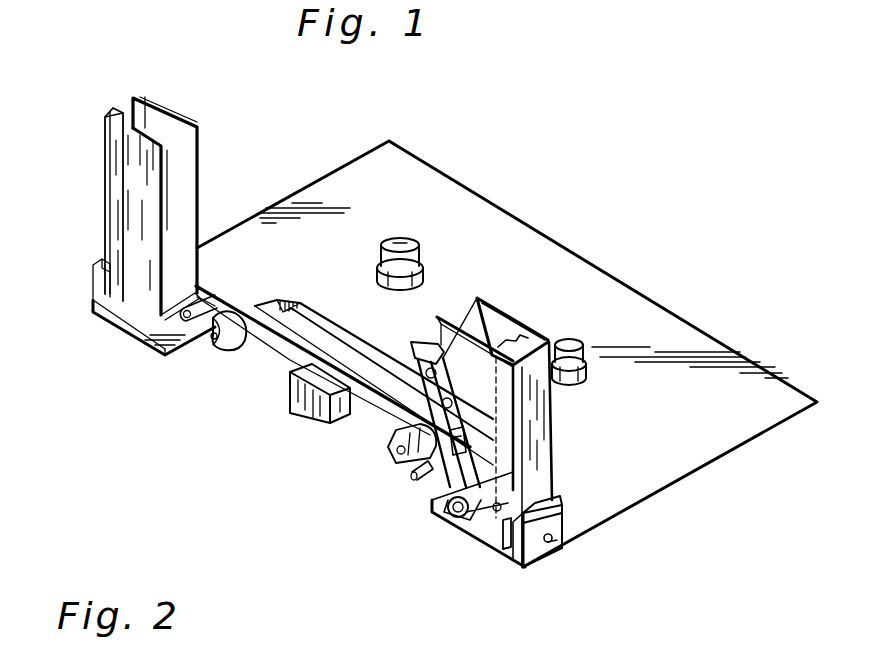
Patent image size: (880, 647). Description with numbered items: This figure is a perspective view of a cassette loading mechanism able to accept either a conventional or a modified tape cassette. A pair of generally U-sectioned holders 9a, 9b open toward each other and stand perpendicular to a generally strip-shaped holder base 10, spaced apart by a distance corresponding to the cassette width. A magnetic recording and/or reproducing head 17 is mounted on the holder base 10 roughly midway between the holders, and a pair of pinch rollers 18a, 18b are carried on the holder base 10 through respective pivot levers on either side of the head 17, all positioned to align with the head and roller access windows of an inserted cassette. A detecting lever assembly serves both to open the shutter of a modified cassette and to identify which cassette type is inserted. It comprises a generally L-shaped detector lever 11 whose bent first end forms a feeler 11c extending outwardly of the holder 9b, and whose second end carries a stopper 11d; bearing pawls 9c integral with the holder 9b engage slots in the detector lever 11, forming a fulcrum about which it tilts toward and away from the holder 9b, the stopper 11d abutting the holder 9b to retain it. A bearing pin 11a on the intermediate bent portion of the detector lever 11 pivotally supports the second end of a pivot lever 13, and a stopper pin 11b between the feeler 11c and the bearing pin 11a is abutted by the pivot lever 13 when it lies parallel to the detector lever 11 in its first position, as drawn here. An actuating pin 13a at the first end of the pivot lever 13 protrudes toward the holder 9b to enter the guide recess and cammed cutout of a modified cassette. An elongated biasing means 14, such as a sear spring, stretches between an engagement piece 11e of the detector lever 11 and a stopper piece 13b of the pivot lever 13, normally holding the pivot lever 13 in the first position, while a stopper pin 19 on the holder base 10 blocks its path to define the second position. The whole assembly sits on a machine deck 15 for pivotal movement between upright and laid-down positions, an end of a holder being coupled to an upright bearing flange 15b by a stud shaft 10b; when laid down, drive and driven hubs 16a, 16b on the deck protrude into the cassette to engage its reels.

The U-sectioned holder 9a is at (163, 130).
The U-sectioned holder 9b is at (488, 332).
The bearing pawls 9c is at (508, 542).
The holder base 10 is at (173, 278).
The stud shaft 10b is at (562, 542).
The detector lever 11 is at (468, 422).
The bearing pin 11a is at (452, 527).
The stopper pin 11b is at (562, 333).
The feeler 11c is at (418, 341).
The stopper 11d is at (504, 522).
The engagement piece 11e is at (526, 556).
The pivot lever 13 is at (550, 337).
The actuating pin 13a is at (440, 323).
The stopper piece 13b is at (466, 446).
The biasing means 14 is at (443, 482).
The machine deck 15 is at (371, 183).
The bearing flange 15b is at (541, 553).
The drive hub 16a is at (402, 240).
The driven hub 16b is at (578, 341).
The magnetic recording and/or reproducing head 17 is at (300, 400).
The pinch roller 18a is at (387, 437).
The pinch roller 18b is at (218, 348).
The stopper pin 19 is at (416, 477).